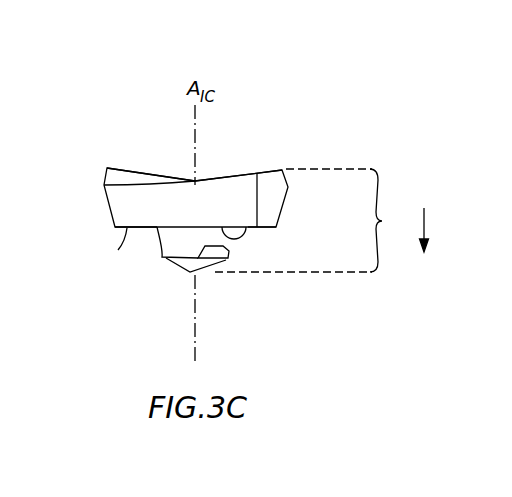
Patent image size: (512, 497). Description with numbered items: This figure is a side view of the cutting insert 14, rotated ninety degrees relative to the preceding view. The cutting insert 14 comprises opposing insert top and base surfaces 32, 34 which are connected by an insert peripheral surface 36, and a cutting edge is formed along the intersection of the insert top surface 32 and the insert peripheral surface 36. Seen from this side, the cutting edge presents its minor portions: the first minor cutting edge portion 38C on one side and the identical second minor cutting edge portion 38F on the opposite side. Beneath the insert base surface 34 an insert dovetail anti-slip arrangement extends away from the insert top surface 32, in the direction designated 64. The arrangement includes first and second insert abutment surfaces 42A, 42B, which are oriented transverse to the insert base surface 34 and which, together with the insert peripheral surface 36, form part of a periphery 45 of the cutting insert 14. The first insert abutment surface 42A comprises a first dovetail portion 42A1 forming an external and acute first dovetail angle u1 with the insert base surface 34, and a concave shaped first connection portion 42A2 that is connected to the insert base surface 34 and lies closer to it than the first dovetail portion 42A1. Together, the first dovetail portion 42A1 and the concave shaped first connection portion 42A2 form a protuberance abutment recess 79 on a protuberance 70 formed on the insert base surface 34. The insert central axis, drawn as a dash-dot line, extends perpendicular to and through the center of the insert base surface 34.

The cutting insert 14 is at (220, 191).
The insert top surface 32 is at (275, 164).
The insert base surface 34 is at (151, 238).
The insert peripheral surface 36 is at (289, 199).
The second minor cutting edge portion 38F is at (164, 181).
The first minor cutting edge portion 38C is at (208, 180).
The first insert abutment surface 42A is at (276, 234).
The first dovetail portion 42A1 is at (230, 246).
The concave shaped first connection portion 42A2 is at (228, 238).
The second insert abutment surface 42B is at (162, 257).
The periphery 45 is at (392, 220).
The direction 64 is at (427, 215).
The protuberance 70 is at (127, 228).
The protuberance abutment recess 79 is at (144, 250).
The first dovetail angle u1 is at (256, 238).